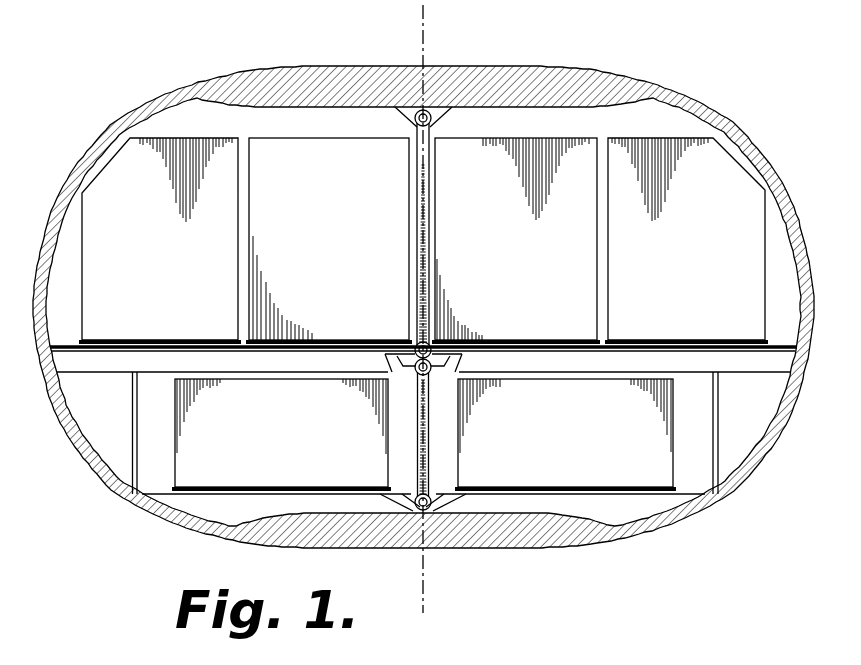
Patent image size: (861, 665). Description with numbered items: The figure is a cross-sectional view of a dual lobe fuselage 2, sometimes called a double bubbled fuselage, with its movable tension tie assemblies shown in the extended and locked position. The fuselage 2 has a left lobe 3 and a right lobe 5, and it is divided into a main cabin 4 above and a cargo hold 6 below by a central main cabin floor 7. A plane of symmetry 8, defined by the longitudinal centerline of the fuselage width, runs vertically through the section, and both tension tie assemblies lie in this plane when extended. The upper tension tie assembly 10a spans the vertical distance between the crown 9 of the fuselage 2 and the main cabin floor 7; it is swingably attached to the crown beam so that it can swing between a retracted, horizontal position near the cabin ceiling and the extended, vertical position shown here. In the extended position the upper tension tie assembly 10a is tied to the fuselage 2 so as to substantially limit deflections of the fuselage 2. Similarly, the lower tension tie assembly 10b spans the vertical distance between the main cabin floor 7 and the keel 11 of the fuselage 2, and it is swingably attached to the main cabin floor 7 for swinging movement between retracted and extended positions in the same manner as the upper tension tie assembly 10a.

The dual lobe fuselage 2 is at (193, 80).
The left lobe 3 is at (198, 117).
The main cabin 4 is at (640, 111).
The right lobe 5 is at (603, 104).
The cargo hold 6 is at (620, 512).
The main cabin floor 7 is at (102, 357).
The plane of symmetry 8 is at (426, 17).
The crown 9 is at (412, 115).
The upper tension tie assembly 10a is at (434, 164).
The lower tension tie assembly 10b is at (432, 452).
The keel 11 is at (452, 506).